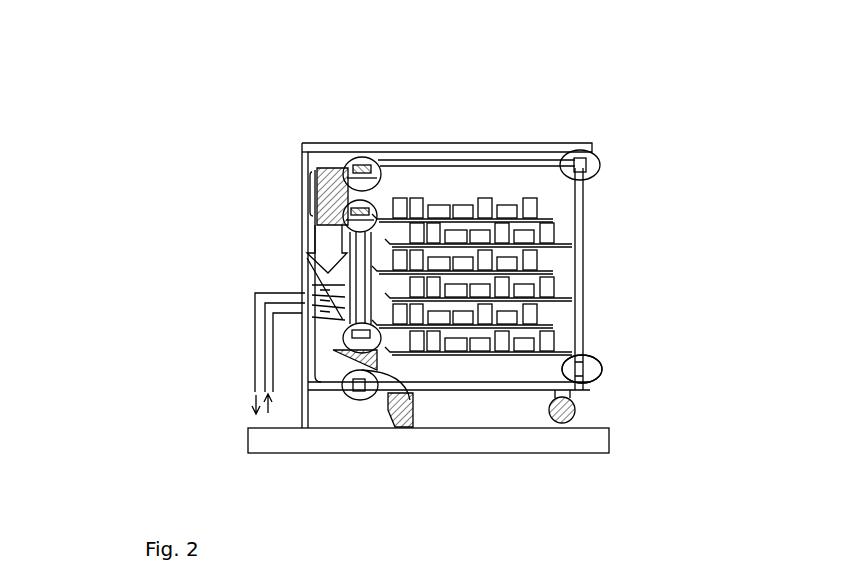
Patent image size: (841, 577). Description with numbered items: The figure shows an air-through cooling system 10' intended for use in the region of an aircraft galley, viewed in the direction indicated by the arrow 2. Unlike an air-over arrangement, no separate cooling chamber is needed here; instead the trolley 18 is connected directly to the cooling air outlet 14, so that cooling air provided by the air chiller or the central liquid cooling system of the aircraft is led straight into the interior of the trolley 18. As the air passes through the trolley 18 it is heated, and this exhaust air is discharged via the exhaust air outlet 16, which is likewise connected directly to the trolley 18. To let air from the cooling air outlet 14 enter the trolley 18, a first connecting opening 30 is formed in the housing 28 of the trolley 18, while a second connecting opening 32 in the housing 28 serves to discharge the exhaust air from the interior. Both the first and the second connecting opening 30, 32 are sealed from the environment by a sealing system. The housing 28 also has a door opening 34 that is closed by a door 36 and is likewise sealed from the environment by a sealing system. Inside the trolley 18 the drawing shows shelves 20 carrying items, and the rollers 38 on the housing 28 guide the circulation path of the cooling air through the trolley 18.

The air-through cooling system 10' is at (337, 274).
The viewing direction 2 is at (183, 144).
The cooling air outlet 14 is at (353, 398).
The exhaust air outlet 16 is at (335, 163).
The trolley 18 is at (424, 178).
The rack shelf with items 20 is at (493, 350).
The housing 28 is at (480, 148).
The first connecting opening 30 is at (400, 386).
The second connecting opening 32 is at (383, 170).
The door opening 34 is at (597, 378).
The door 36 is at (584, 255).
The deflection rollers 38 is at (593, 185).